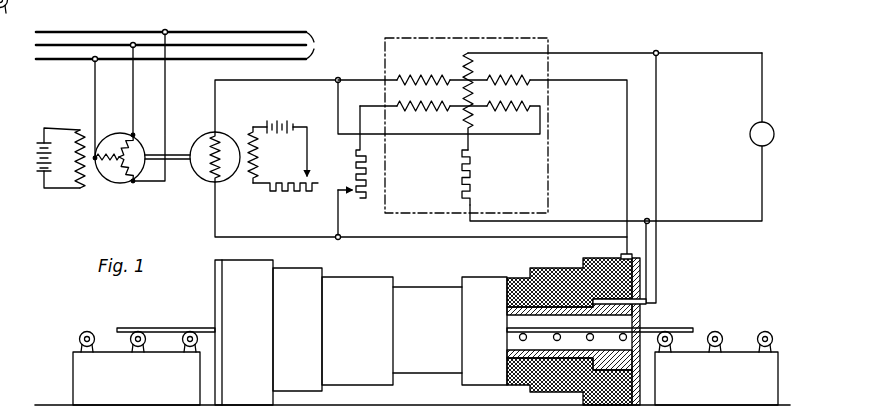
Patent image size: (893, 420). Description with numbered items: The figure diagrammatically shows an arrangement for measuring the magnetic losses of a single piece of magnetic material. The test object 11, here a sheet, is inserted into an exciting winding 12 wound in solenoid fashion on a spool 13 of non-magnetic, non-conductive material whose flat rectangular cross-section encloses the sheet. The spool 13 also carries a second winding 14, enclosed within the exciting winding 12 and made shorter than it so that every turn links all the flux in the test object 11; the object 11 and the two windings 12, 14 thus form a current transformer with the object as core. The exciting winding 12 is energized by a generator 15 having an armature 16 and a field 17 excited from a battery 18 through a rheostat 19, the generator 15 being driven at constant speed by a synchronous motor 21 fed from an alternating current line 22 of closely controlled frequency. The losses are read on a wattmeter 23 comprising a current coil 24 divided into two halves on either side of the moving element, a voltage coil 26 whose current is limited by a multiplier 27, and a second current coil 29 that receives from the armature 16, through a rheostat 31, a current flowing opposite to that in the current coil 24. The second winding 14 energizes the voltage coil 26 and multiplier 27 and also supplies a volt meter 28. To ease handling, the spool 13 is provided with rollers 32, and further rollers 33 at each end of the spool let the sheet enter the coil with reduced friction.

The test object 11 is at (674, 331).
The exciting winding 12 is at (563, 270).
The spool 13 is at (641, 310).
The second winding 14 is at (506, 300).
The generator 15 is at (251, 153).
The armature 16 is at (207, 138).
The field 17 is at (257, 150).
The battery 18 is at (284, 118).
The rheostat 19 is at (277, 192).
The synchronous motor 21 is at (100, 202).
The alternating current line 22 is at (314, 45).
The wattmeter 23 is at (462, 125).
The current coil 24 is at (525, 75).
The voltage coil 26 is at (463, 59).
The multiplier 27 is at (462, 174).
The volt meter 28 is at (757, 126).
The second current coil 29 is at (522, 116).
The rheostat 31 is at (356, 165).
The rollers 32 is at (553, 339).
The rollers 33 is at (684, 341).